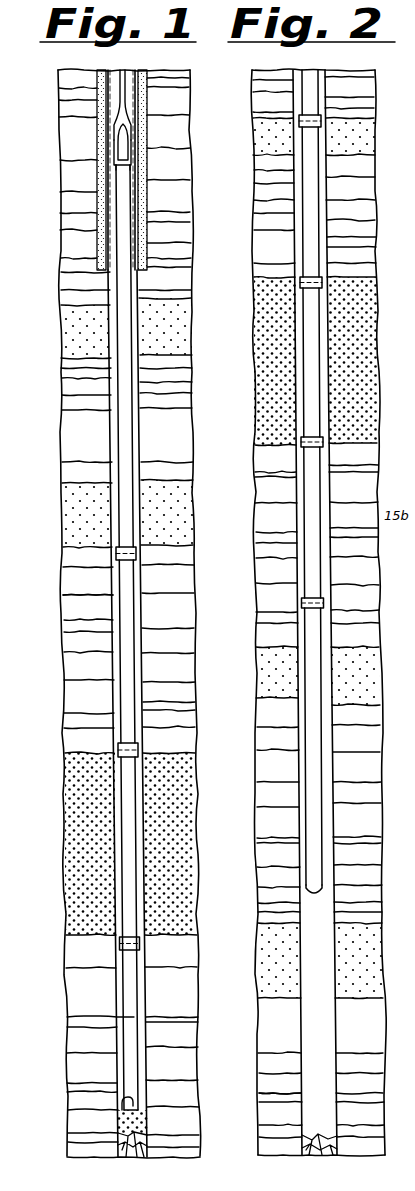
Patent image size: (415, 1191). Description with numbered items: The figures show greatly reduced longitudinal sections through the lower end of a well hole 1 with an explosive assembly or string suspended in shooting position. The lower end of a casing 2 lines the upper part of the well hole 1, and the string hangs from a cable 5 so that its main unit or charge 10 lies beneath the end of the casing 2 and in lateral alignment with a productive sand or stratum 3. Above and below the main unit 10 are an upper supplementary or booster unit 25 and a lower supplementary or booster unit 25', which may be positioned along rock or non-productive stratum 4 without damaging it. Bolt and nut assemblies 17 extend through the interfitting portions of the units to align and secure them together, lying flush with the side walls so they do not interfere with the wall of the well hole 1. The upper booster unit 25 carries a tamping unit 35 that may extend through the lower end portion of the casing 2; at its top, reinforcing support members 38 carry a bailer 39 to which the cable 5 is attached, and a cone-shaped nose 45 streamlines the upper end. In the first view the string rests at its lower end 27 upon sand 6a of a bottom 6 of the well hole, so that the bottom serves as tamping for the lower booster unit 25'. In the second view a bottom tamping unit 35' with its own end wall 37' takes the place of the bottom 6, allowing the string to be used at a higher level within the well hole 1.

In FIG. 1, the well hole 1 is at (139, 285).
In FIG. 2, the well hole 1 is at (325, 254).
In FIG. 1, the casing 2 is at (104, 75).
In FIG. 1, the productive sand or stratum 3 is at (95, 782).
In FIG. 2, the productive sand or stratum 3 is at (272, 308).
In FIG. 1, the rock or non-productive stratum 4 is at (73, 518).
In FIG. 2, the rock or non-productive stratum 4 is at (272, 240).
In FIG. 1, the cable 5 is at (131, 79).
In FIG. 2, the cable 5 is at (250, 71).
In FIG. 1, the bottom of the well hole 6 is at (112, 1140).
In FIG. 2, the bottom of the well hole 6 is at (297, 1142).
In FIG. 1, the sand 6a is at (150, 1127).
In FIG. 1, the main unit or charge 10 is at (130, 831).
In FIG. 2, the main unit or charge 10 is at (313, 360).
In FIG. 1, the bolt and nut assembly 17 is at (120, 563).
In FIG. 2, the bolt and nut assembly 17 is at (312, 609).
In FIG. 1, the upper supplementary or booster unit 25 is at (82, 651).
In FIG. 2, the upper supplementary or booster unit 25 is at (269, 308).
In FIG. 1, the lower supplementary or booster unit 25' is at (84, 933).
In FIG. 2, the lower supplementary or booster unit 25' is at (270, 517).
In FIG. 1, the bottom closure wall 27 is at (121, 1099).
In FIG. 1, the upper tamping unit 35 is at (81, 356).
In FIG. 2, the upper tamping unit 35 is at (269, 173).
In FIG. 2, the bottom tamping unit 35' is at (269, 746).
In FIG. 2, the tubing end plug 37' is at (317, 915).
In FIG. 1, the reinforcing support members 38 is at (118, 142).
In FIG. 1, the bailer 39 is at (117, 108).
In FIG. 1, the cone-shaped nose 45 is at (123, 150).